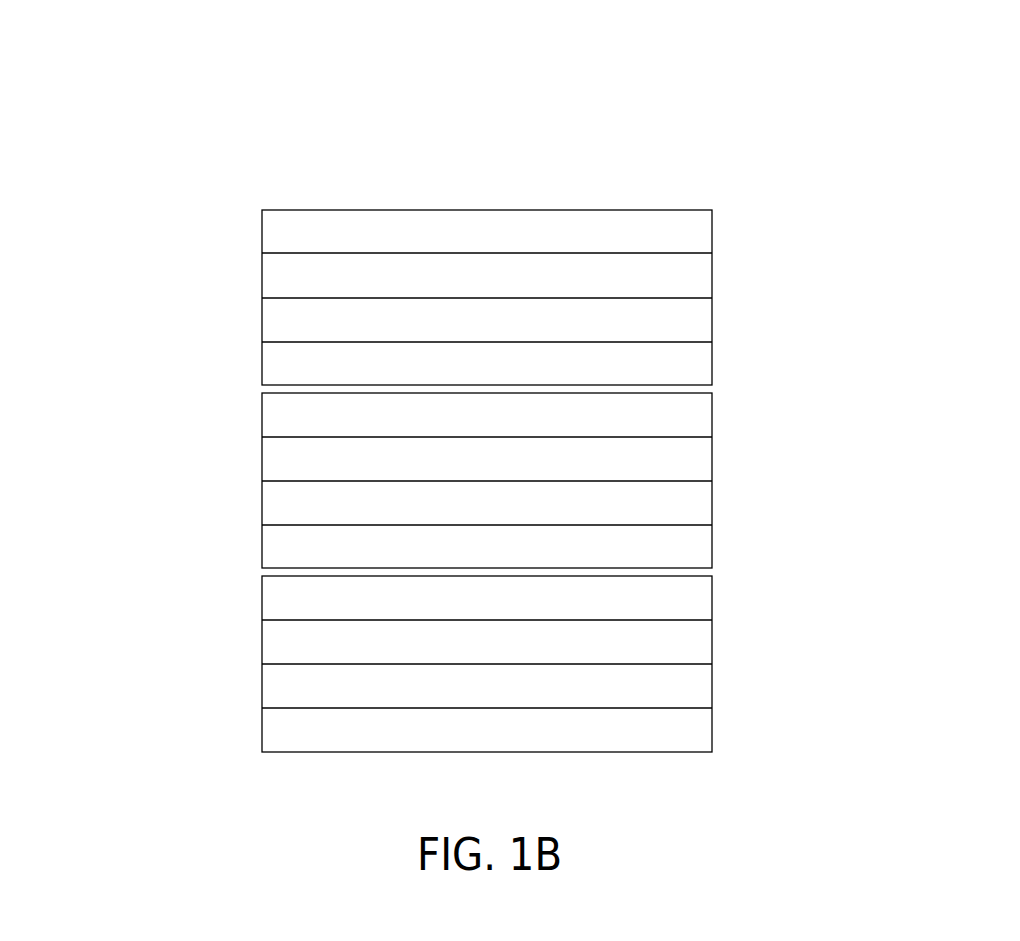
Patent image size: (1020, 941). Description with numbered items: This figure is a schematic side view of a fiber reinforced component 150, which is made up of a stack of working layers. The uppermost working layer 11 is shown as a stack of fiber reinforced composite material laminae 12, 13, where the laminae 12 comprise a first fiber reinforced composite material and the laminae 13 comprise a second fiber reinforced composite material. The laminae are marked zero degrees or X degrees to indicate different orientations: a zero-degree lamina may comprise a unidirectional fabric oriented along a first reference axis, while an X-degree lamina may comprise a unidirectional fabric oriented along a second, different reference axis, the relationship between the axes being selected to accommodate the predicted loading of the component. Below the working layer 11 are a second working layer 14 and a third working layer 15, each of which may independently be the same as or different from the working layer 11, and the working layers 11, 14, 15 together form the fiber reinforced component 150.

The fiber reinforced component 150 is at (170, 138).
The working layer 11 is at (442, 237).
The fiber reinforced composite material laminae 12 is at (285, 358).
The fiber reinforced composite material laminae 13 is at (577, 318).
The second working layer 14 is at (718, 394).
The third working layer 15 is at (718, 578).